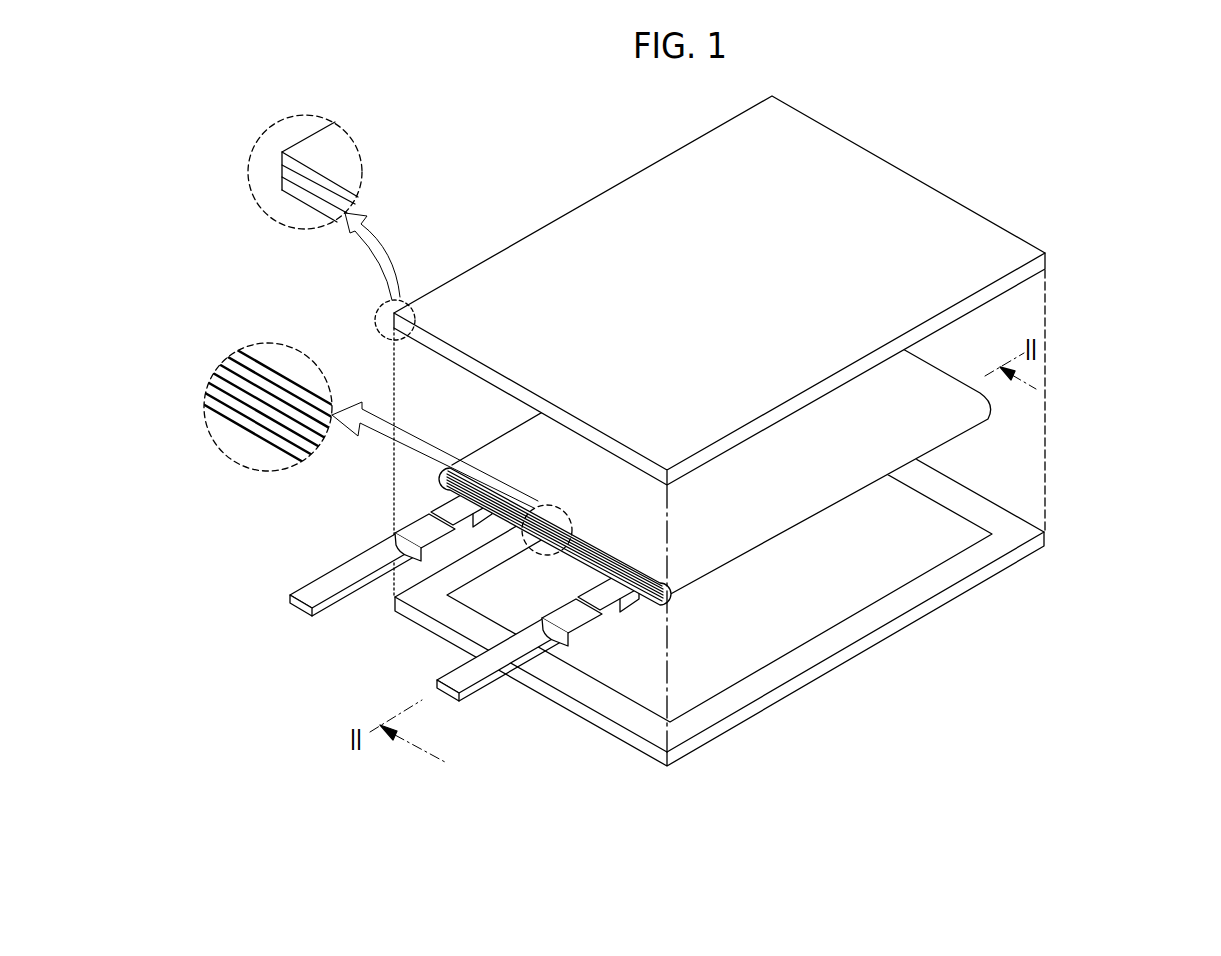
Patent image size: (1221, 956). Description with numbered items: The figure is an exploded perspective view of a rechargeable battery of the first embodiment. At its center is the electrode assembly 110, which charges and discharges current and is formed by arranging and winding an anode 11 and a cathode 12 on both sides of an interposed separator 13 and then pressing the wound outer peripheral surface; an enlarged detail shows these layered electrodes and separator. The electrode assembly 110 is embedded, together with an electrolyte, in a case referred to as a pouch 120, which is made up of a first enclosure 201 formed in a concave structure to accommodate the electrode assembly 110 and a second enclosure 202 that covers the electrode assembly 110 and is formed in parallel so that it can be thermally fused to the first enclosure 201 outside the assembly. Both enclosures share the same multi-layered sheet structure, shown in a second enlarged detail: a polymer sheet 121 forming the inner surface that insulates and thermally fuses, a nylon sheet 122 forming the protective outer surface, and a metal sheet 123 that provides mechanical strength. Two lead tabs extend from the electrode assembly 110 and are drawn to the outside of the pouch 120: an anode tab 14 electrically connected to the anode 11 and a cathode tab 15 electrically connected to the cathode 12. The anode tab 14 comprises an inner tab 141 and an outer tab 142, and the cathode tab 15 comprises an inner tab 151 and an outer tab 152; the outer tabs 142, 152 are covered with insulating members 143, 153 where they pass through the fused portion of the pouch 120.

The electrode assembly 110 is at (817, 522).
The pouch 120 is at (669, 431).
The first enclosure 201 is at (997, 512).
The second enclosure 202 is at (1003, 290).
The anode tab 14 is at (731, 376).
The inner tab 141 is at (488, 528).
The outer tab 142 is at (322, 607).
The insulating member 143 is at (416, 523).
The cathode tab 15 is at (805, 475).
The inner tab 151 is at (638, 611).
The outer tab 152 is at (443, 698).
The insulating member 153 is at (583, 628).
The anode 11 is at (247, 407).
The cathode 12 is at (272, 392).
The separator 13 is at (247, 437).
The polymer sheet 121 is at (289, 197).
The nylon sheet 122 is at (282, 154).
The metal sheet 123 is at (282, 172).